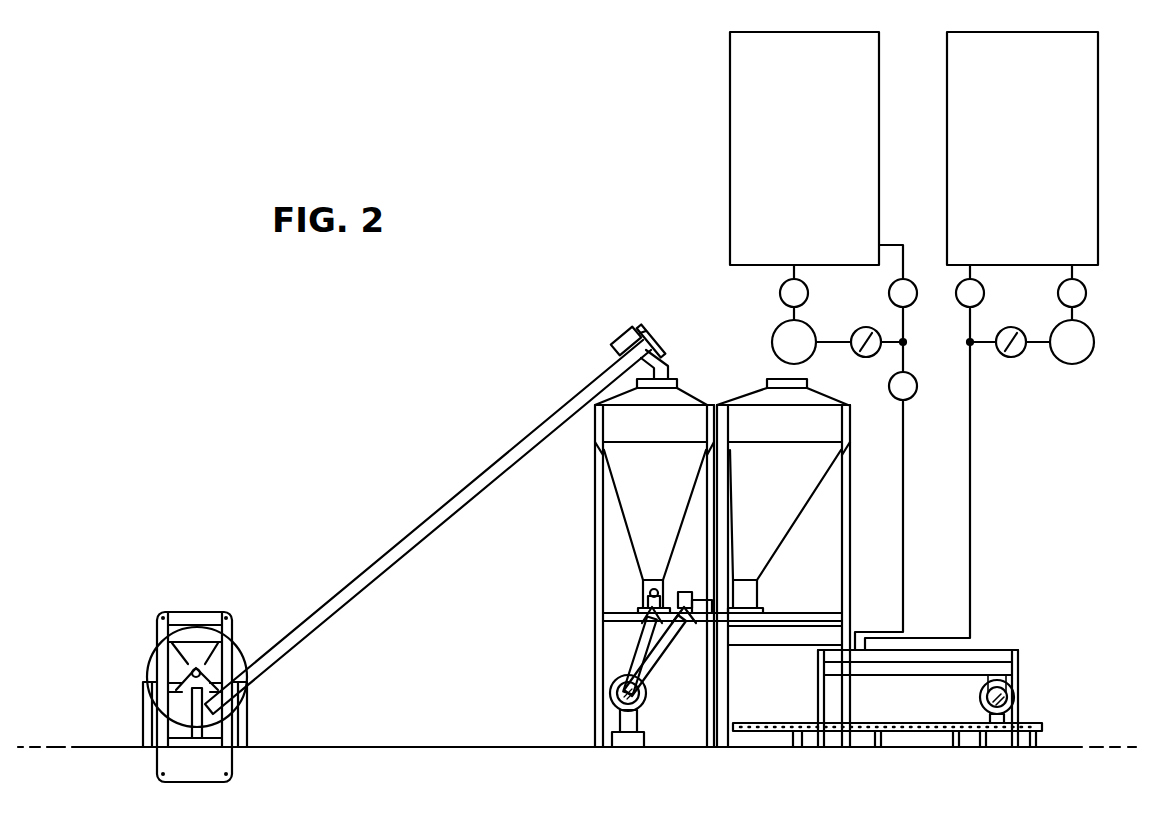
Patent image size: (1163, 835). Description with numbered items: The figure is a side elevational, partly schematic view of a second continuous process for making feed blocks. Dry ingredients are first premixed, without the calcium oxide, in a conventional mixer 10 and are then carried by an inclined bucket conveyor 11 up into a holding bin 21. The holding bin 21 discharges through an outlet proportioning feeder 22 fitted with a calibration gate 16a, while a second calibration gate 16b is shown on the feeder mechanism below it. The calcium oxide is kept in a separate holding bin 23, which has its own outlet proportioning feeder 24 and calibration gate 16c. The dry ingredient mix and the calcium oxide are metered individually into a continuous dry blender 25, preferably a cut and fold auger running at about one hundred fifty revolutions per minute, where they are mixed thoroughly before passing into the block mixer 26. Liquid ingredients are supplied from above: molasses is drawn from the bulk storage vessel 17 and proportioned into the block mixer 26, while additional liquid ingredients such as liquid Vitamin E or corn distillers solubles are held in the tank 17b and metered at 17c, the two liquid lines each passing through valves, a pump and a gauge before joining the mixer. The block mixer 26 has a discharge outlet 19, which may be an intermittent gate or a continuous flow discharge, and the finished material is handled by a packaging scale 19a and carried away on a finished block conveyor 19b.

The mixer 10 is at (222, 608).
The bucket conveyor 11 is at (442, 502).
The calibration gate 16a is at (632, 622).
The calibration gate 16b is at (612, 698).
The calibration gate 16c is at (684, 598).
The bulk storage vessel 17 is at (732, 197).
The tank 17b is at (1085, 210).
The metering device 17c is at (1062, 367).
The discharge outlet 19 is at (1025, 665).
The packaging scale 19a is at (1008, 697).
The finished block conveyor 19b is at (1050, 728).
The holding bin 21 is at (630, 482).
The outlet proportioning feeder 22 is at (643, 586).
The holding bin 23 is at (790, 510).
The outlet proportioning feeder 24 is at (750, 592).
The continuous dry blender 25 is at (773, 633).
The block mixer 26 is at (978, 655).